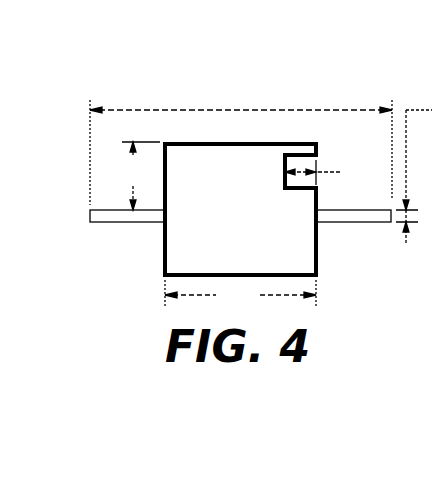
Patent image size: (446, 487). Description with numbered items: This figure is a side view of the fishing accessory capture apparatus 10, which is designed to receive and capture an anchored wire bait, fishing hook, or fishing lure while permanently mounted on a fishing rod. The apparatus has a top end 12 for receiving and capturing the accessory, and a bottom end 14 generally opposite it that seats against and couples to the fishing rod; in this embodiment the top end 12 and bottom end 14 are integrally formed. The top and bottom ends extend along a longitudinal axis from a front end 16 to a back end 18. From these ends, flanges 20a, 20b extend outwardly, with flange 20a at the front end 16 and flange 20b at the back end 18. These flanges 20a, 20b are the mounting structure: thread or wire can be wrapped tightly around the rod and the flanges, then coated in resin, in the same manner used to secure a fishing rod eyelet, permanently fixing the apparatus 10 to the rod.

The fishing accessory capture apparatus 10 is at (72, 60).
The top end 12 is at (246, 112).
The bottom end 14 is at (281, 291).
The front end 16 is at (152, 172).
The back end 18 is at (354, 192).
The flange 20a is at (105, 218).
The flange 20b is at (370, 218).